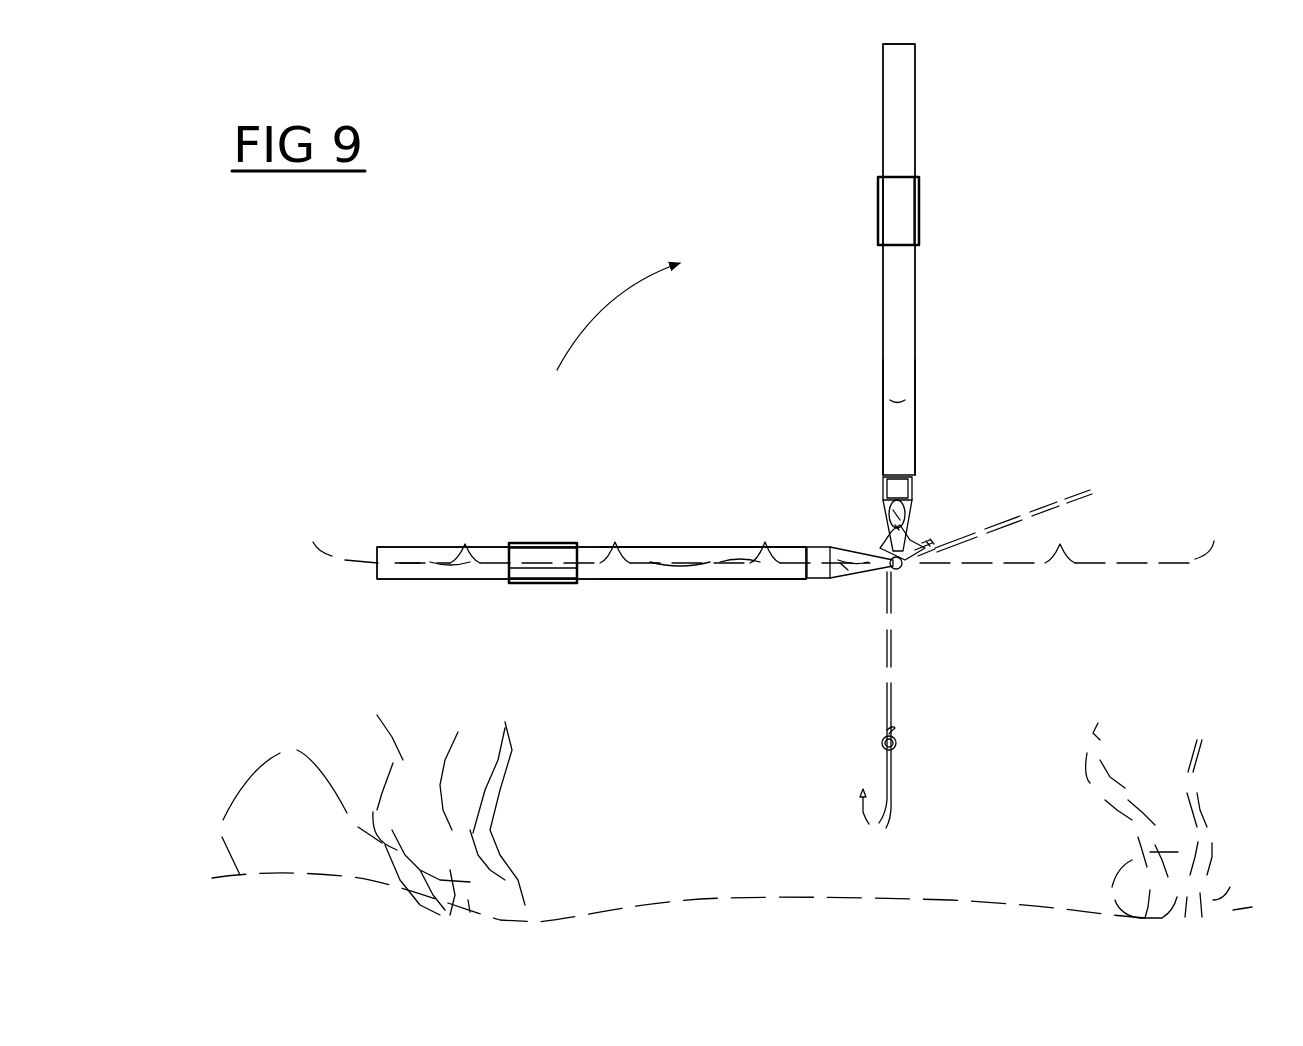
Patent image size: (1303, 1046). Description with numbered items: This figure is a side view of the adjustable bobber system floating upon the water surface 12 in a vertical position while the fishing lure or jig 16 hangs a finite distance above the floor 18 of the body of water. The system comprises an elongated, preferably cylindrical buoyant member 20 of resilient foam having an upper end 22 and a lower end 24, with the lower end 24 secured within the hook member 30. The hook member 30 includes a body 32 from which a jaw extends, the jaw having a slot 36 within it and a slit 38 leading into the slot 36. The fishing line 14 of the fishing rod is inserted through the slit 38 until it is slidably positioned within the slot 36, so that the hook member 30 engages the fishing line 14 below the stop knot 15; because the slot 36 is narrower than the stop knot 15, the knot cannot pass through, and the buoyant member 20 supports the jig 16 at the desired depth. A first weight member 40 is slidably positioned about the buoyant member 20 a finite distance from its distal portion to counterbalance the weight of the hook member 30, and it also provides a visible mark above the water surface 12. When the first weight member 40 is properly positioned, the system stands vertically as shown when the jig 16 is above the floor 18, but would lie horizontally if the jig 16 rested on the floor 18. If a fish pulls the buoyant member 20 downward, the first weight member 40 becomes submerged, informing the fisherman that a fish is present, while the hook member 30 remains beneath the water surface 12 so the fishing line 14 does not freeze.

The water surface 12 is at (1135, 565).
The fishing line 14 is at (893, 668).
The stop knot 15 is at (950, 538).
The jig 16 is at (860, 800).
The floor 18 is at (722, 897).
The buoyant member 20 is at (872, 291).
The upper end 22 is at (903, 120).
The lower end 24 is at (900, 455).
The hook member 30 is at (818, 540).
The body 32 is at (808, 581).
The slot 36 is at (905, 567).
The slit 38 is at (882, 540).
The first weight member 40 is at (903, 215).